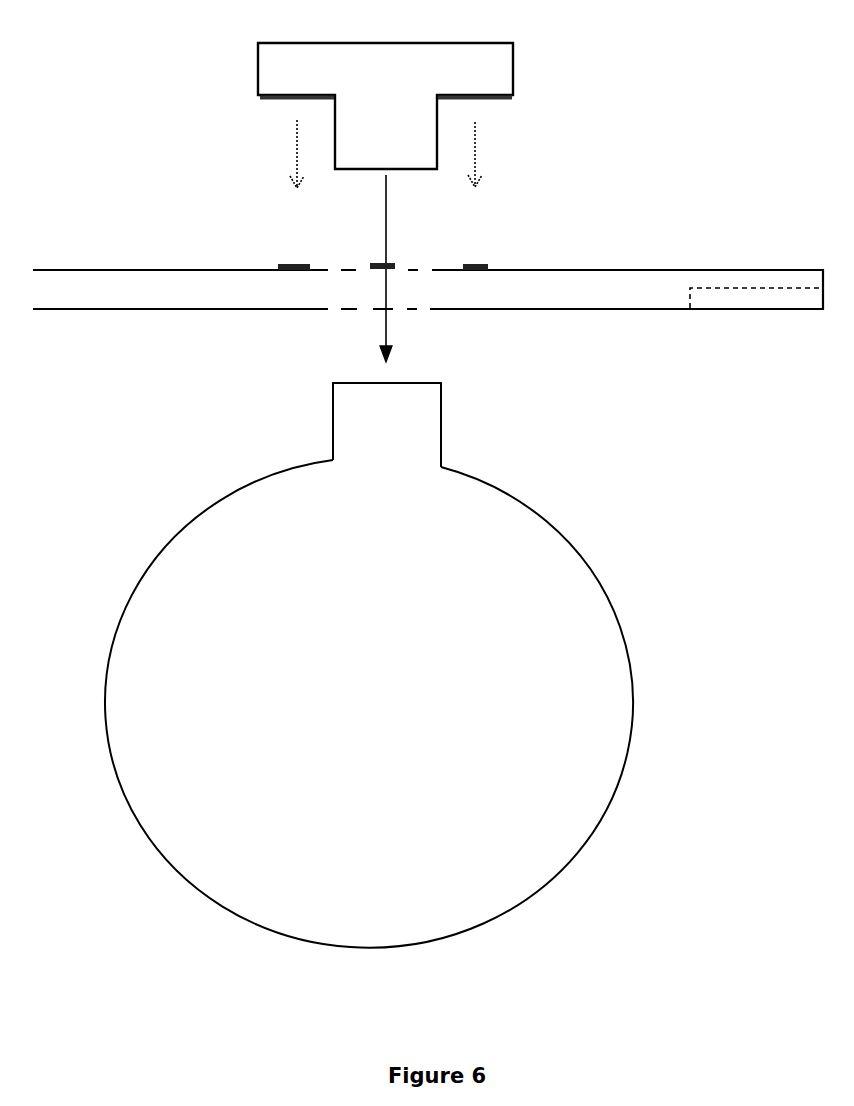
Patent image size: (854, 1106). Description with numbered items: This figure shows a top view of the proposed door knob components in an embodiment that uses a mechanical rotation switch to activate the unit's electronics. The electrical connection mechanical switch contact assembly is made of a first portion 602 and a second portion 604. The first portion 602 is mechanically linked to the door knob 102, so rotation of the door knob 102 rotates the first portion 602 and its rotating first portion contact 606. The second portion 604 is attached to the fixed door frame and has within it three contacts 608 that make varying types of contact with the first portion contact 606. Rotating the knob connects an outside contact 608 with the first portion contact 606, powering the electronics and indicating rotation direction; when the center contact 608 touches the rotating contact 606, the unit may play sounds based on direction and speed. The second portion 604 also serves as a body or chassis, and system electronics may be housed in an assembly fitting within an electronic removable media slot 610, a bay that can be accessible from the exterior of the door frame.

The first portion 602 is at (385, 91).
The second portion 604 is at (78, 286).
The first portion contact 606 is at (290, 95).
The contacts 608 is at (315, 263).
The electronic removable media slot 610 is at (767, 298).
The door knob 102 is at (369, 665).